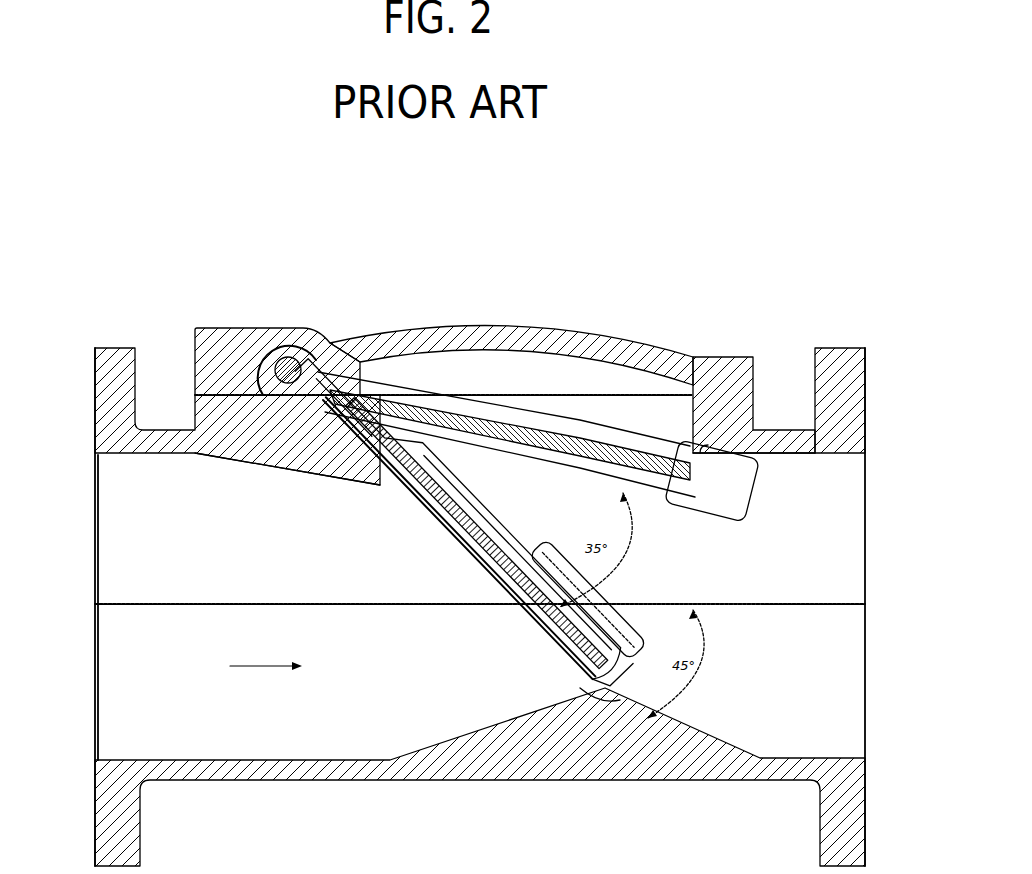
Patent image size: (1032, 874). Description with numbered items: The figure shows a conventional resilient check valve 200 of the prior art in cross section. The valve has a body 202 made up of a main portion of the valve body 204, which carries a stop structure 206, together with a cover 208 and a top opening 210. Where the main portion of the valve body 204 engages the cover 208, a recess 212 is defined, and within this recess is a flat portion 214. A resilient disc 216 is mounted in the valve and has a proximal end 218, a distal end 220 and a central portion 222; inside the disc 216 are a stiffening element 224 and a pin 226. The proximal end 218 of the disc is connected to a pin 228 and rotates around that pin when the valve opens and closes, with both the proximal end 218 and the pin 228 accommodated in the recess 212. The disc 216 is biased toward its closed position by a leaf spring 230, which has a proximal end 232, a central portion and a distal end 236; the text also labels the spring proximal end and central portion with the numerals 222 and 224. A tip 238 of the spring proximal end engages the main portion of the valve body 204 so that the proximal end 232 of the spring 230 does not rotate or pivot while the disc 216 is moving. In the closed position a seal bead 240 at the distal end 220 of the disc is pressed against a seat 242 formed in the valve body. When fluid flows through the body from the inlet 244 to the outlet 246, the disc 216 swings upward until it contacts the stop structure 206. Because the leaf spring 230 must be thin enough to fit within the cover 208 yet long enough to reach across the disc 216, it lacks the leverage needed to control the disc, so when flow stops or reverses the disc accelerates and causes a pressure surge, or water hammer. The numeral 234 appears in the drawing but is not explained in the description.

The resilient check valve 200 is at (251, 257).
The body 202 is at (763, 386).
The main portion of the valve body 204 is at (790, 447).
The stop structure 206 is at (707, 447).
The cover 208 is at (726, 355).
The top opening 210 is at (693, 394).
The recess 212 is at (284, 345).
The flat portion 214 is at (268, 400).
The resilient disc 216 is at (440, 523).
The proximal end 218 is at (313, 350).
The distal end 220 is at (628, 693).
The central portion 222 is at (520, 497).
The stiffening element 224 is at (405, 490).
The pin 226 is at (552, 578).
The pin 228 is at (285, 342).
The leaf spring 230 is at (492, 482).
The proximal end of the spring 232 is at (197, 352).
The arm upper edge 234 is at (457, 466).
The distal end 236 is at (555, 575).
The tip 238 is at (198, 455).
The seal bead 240 is at (610, 683).
The seat 242 is at (608, 690).
The inlet 244 is at (95, 455).
The outlet 246 is at (865, 452).